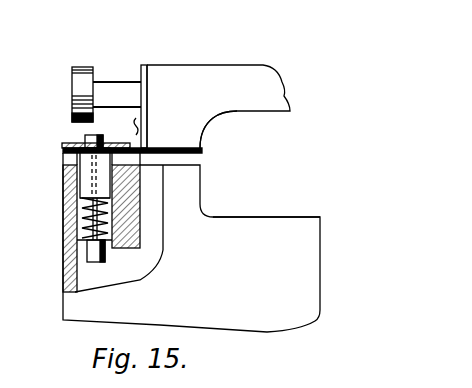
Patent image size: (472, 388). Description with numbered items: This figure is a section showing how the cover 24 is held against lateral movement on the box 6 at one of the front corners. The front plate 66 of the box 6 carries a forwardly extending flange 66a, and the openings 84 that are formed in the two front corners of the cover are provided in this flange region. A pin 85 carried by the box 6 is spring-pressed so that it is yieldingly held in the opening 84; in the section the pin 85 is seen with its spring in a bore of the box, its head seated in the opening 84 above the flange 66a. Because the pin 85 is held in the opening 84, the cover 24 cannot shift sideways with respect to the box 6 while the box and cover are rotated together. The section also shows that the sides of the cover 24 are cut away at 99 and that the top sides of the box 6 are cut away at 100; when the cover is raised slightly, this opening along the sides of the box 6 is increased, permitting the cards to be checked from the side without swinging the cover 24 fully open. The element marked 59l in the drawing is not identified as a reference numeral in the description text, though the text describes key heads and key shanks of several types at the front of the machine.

The box 6 is at (320, 262).
The cover 24 is at (205, 72).
The pin cylinder 59l is at (83, 66).
The front plate 66 is at (141, 72).
The forwardly extending flange 66a is at (62, 148).
The openings 84 is at (80, 145).
The pins 85 is at (100, 138).
The cut-away portion of cover sides 99 is at (209, 116).
The cut-away portion of box top sides 100 is at (245, 216).